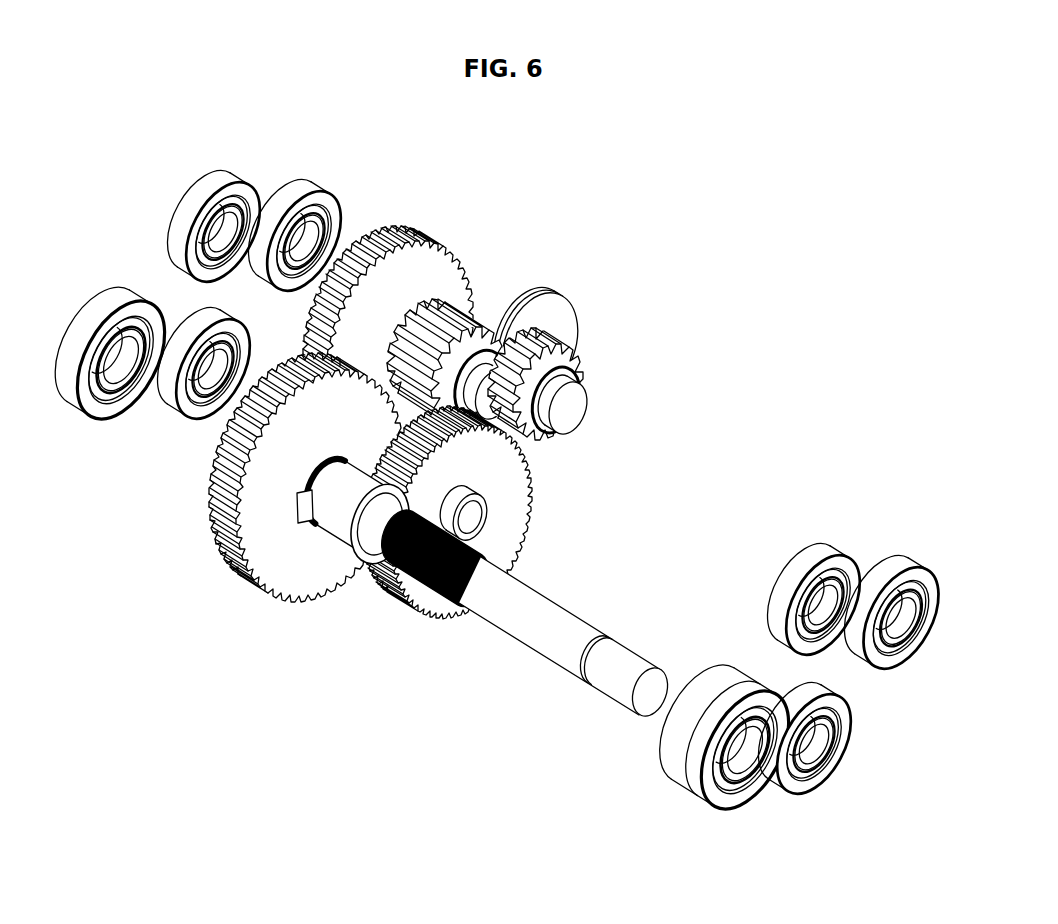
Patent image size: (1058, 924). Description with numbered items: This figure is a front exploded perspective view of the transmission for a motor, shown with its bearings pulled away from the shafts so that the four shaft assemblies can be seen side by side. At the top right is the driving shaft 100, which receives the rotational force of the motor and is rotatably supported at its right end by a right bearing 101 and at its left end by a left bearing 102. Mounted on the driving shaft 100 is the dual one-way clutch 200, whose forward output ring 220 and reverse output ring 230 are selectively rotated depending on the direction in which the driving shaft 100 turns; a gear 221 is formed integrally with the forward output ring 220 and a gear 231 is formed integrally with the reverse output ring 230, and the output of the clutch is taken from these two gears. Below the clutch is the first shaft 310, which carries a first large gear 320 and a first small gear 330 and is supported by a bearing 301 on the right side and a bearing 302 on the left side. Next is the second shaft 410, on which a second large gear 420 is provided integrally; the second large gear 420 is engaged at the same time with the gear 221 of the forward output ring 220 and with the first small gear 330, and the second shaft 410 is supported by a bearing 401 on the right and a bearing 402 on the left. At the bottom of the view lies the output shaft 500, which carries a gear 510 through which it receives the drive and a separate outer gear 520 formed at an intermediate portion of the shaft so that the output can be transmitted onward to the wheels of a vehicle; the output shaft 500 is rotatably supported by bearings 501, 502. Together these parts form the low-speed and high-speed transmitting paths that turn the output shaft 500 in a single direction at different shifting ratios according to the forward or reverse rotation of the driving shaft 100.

The driving shaft 100 is at (575, 410).
The right bearing 101 is at (890, 565).
The left bearing 102 is at (300, 190).
The dual one-way clutch 200 is at (565, 290).
The forward output ring 220 is at (605, 355).
The gear 221 is at (580, 363).
The reverse output ring 230 is at (505, 290).
The gear 231 is at (463, 283).
The bearing 301 is at (805, 562).
The bearing 302 is at (193, 213).
The first shaft 310 is at (497, 398).
The first large gear 320 is at (447, 267).
The first small gear 330 is at (403, 307).
The bearing 401 is at (833, 773).
The bearing 402 is at (165, 400).
The second shaft 410 is at (487, 535).
The second large gear 420 is at (447, 619).
The output shaft 500 is at (637, 667).
The bearing 501 is at (692, 777).
The bearing 502 is at (75, 393).
The gear 510 is at (280, 570).
The outer gear 520 is at (413, 593).